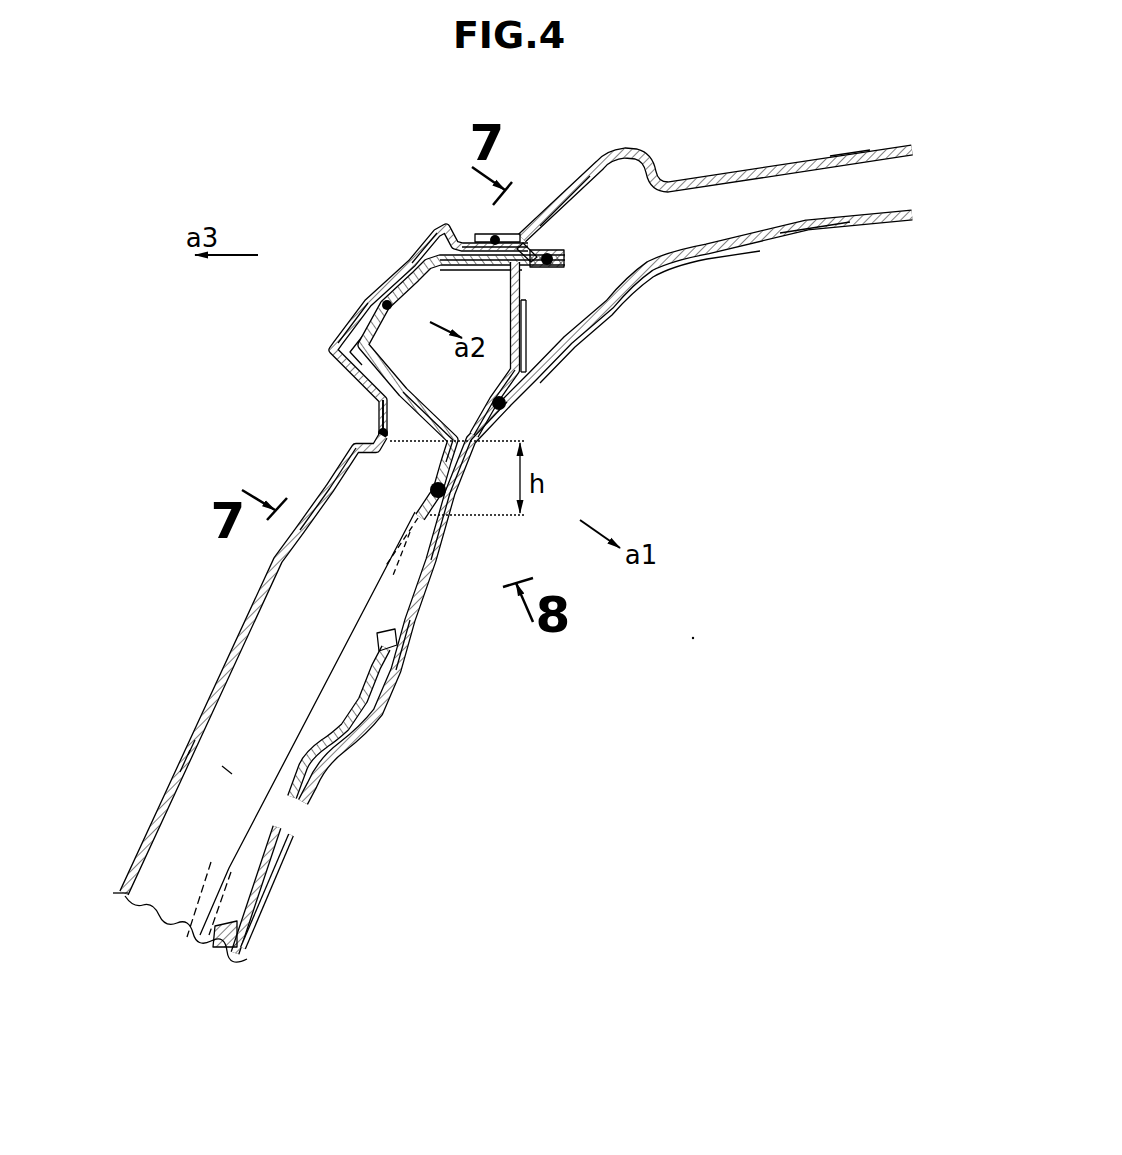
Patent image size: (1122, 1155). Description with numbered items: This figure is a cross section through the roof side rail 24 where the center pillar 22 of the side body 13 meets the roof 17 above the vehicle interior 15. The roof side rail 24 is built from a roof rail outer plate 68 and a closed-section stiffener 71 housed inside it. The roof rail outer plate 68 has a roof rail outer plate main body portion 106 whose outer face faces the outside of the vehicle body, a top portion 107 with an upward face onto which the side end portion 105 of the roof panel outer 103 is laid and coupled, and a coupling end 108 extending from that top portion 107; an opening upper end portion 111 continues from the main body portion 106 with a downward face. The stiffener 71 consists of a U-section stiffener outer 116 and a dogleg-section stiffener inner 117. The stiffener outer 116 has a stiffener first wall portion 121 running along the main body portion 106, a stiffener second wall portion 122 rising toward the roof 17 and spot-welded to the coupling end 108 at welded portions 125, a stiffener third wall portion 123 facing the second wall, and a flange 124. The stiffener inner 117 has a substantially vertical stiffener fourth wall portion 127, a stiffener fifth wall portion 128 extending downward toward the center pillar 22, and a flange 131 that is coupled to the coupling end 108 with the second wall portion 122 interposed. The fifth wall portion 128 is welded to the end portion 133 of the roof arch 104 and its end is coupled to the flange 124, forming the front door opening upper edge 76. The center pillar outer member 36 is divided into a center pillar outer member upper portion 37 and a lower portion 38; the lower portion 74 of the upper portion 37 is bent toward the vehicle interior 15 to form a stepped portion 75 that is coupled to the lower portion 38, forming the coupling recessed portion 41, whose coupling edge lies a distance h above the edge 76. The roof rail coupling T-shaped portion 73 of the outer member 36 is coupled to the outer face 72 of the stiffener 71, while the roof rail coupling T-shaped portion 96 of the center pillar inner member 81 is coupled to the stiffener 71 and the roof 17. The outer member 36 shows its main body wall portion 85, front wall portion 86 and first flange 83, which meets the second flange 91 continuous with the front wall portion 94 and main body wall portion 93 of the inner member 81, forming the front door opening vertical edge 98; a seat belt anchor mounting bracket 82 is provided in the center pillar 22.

The side body 13 is at (178, 617).
The vehicle interior 15 is at (516, 803).
The roof 17 is at (793, 158).
The center pillar 22 is at (193, 717).
The roof side rail 24 is at (404, 242).
The center pillar outer member 36 is at (190, 352).
The center pillar outer member upper portion 37 is at (378, 405).
The center pillar outer member lower portion 38 is at (313, 480).
The coupling recessed portion 41 is at (344, 478).
The roof rail outer plate 68 is at (401, 265).
The stiffener 71 is at (650, 347).
The outer face 72 is at (398, 275).
The roof rail coupling T-shaped portion 73 is at (357, 310).
The lower portion 74 is at (383, 395).
The stepped portion 75 is at (380, 417).
The front door opening upper edge 76 is at (428, 493).
The center pillar inner member 81 is at (430, 568).
The seat belt anchor mounting bracket 82 is at (360, 700).
The first flange 83 is at (217, 867).
The main body wall portion 85 is at (190, 748).
The front wall portion 86 is at (227, 770).
The second flange 91 is at (223, 898).
The main body wall portion 93 is at (413, 630).
The front wall portion 94 is at (390, 675).
The roof rail coupling T-shaped portion 96 is at (529, 324).
The front door opening vertical edge 98 is at (231, 880).
The roof panel outer 103 is at (846, 152).
The roof arch 104 is at (806, 225).
The side end portion 105 is at (514, 234).
The roof rail outer plate main body portion 106 is at (383, 280).
The top portion 107 is at (463, 241).
The coupling end 108 is at (556, 250).
The opening upper end portion 111 is at (352, 368).
The stiffener outer 116 is at (532, 357).
The stiffener inner 117 is at (515, 398).
The stiffener first wall portion 121 is at (464, 272).
The stiffener second wall portion 122 is at (530, 270).
The stiffener third wall portion 123 is at (435, 400).
The flange 124 is at (436, 463).
The welded portions 125 is at (616, 283).
The stiffener fourth wall portion 127 is at (516, 378).
The stiffener fifth wall portion 128 is at (480, 418).
The flange 131 is at (566, 259).
The end portion 133 is at (491, 430).